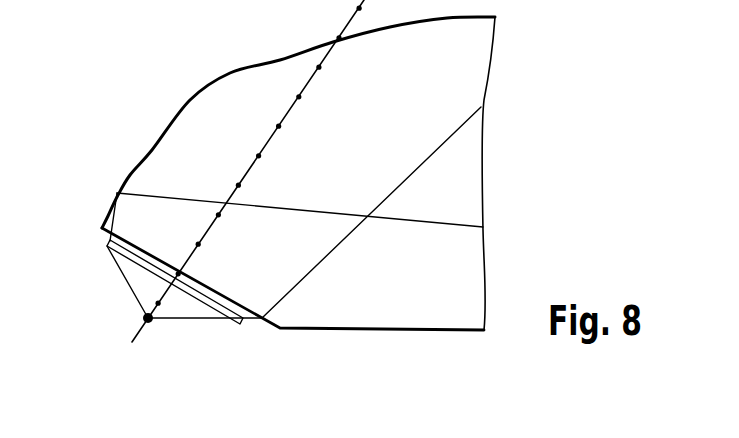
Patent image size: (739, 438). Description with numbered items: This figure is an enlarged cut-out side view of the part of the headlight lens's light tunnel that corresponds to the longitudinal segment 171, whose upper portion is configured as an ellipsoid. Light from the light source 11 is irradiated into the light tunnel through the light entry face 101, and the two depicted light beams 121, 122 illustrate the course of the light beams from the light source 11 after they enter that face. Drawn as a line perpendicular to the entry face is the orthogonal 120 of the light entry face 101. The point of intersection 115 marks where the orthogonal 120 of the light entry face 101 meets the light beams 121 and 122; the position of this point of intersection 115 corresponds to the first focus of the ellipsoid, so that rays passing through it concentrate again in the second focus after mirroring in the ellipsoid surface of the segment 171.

The light source 11 is at (150, 268).
The light entry face 101 is at (210, 303).
The point of intersection 115 is at (150, 324).
The orthogonal of the light entry face 120 is at (289, 110).
The light beam 121 is at (165, 193).
The light beam 122 is at (305, 275).
The longitudinal segment 171 is at (443, 15).